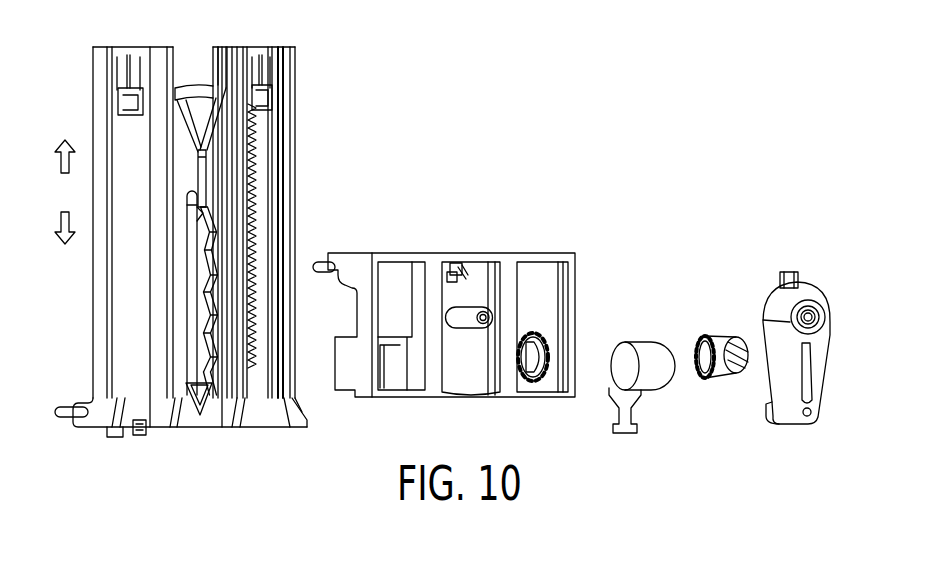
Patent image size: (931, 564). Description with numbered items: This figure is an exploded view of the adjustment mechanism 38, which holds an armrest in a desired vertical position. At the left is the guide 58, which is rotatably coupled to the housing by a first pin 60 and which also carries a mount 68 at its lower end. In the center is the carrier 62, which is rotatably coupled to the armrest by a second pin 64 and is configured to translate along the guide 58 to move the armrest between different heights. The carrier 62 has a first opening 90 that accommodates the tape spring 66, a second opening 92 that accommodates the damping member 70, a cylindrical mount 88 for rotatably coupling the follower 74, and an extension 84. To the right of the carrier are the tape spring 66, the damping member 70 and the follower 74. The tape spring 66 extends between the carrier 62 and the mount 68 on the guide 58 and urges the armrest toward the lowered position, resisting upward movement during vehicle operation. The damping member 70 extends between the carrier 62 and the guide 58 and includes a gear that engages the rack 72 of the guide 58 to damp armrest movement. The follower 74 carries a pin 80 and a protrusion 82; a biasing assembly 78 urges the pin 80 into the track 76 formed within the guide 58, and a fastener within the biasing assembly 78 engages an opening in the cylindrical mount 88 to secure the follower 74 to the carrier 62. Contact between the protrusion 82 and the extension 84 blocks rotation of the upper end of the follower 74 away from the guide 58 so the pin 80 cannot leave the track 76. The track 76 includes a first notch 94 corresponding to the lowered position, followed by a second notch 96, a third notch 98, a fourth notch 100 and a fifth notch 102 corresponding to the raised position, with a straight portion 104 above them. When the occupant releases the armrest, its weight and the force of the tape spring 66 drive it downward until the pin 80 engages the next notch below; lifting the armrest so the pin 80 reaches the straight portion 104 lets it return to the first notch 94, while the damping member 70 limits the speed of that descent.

The adjustment mechanism 38 is at (512, 187).
The guide 58 is at (281, 52).
The first pin 60 is at (75, 414).
The carrier 62 is at (573, 270).
The second pin 64 is at (320, 262).
The tape spring 66 is at (663, 377).
The mount 68 is at (146, 432).
The damping member 70 is at (715, 375).
The rack 72 is at (258, 168).
The follower 74 is at (788, 271).
The track 76 is at (217, 247).
The biasing assembly 78 is at (784, 310).
The pin 80 is at (770, 406).
The protrusion 82 is at (800, 276).
The extension 84 is at (454, 263).
The cylindrical mount 88 is at (486, 314).
The first opening 90 is at (388, 378).
The second opening 92 is at (548, 340).
The first notch 94 is at (204, 415).
The second notch 96 is at (203, 365).
The third notch 98 is at (207, 322).
The fourth notch 100 is at (207, 280).
The fifth notch 102 is at (207, 248).
The straight portion 104 is at (187, 232).